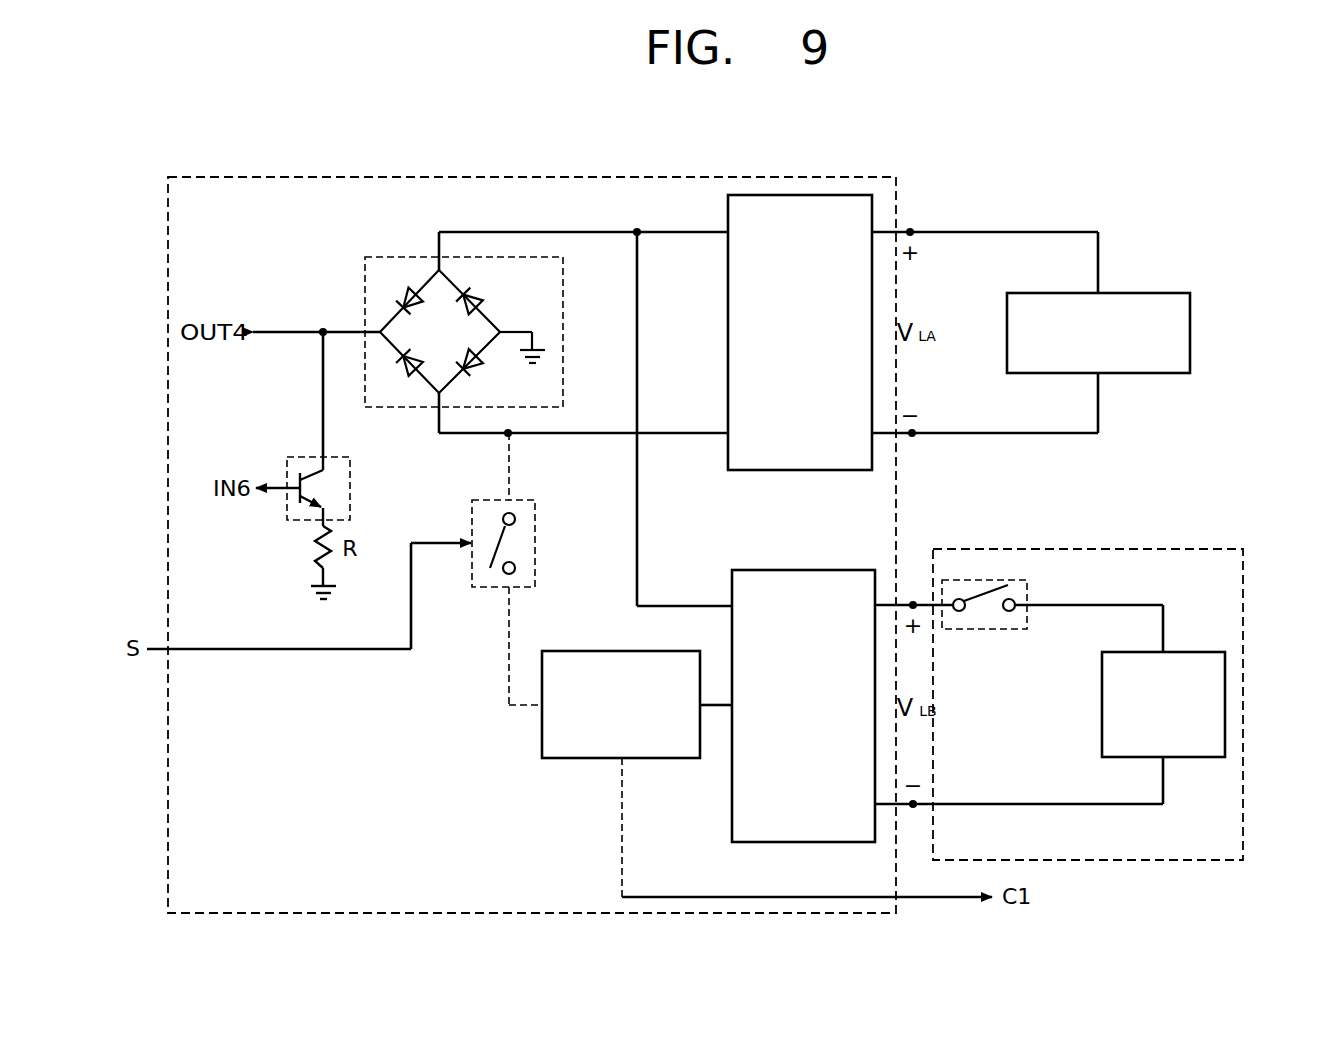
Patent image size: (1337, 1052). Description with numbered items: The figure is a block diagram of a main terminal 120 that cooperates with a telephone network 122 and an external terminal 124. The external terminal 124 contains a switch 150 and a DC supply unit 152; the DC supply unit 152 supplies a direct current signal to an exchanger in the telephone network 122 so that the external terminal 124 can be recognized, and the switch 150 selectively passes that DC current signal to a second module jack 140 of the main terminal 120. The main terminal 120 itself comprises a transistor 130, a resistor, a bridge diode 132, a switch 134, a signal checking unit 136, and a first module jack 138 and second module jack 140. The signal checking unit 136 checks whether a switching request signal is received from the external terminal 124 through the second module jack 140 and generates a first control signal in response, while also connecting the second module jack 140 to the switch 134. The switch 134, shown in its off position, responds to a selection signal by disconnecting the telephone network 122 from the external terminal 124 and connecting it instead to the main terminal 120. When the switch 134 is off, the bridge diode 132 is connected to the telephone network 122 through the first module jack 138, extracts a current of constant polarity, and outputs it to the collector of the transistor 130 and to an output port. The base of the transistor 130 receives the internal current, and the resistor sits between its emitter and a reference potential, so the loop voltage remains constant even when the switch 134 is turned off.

The main terminal 120 is at (782, 177).
The telephone network 122 is at (1138, 292).
The external terminal 124 is at (1190, 549).
The transistor 130 is at (297, 523).
The bridge diode 132 is at (365, 282).
The switch 134 is at (535, 562).
The signal checking unit 136 is at (565, 763).
The first module jack 138 is at (738, 390).
The second module jack 140 is at (740, 578).
The switch 150 is at (1027, 595).
The DC supply unit 152 is at (1192, 652).